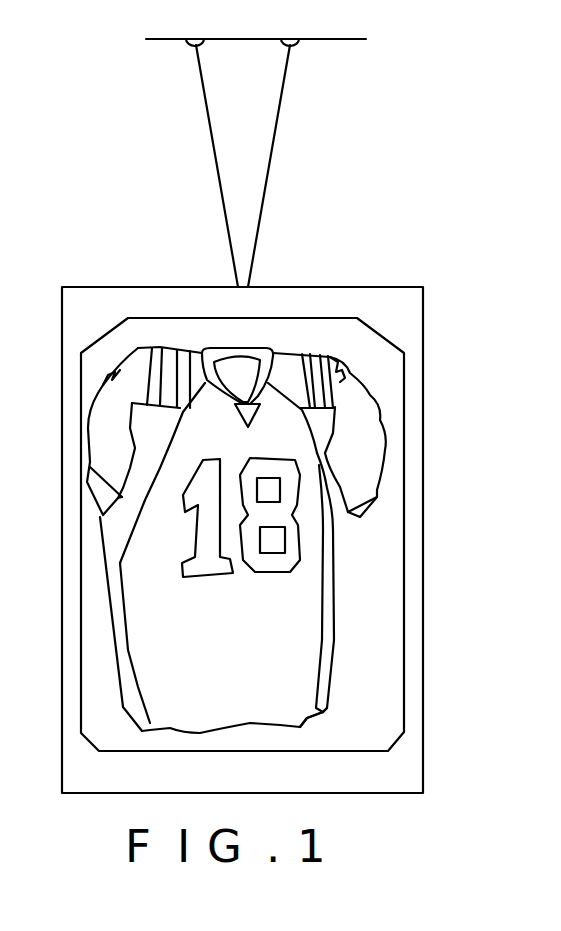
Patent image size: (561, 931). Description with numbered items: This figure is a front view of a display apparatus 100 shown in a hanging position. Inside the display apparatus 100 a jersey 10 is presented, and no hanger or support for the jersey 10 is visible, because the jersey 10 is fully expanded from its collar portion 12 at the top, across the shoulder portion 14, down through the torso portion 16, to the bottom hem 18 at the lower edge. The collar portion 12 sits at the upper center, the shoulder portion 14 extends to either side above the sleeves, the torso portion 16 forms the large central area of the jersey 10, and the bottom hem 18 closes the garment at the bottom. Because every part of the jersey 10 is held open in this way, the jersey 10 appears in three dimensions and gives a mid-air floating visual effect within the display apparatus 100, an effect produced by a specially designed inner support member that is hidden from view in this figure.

The display apparatus 100 is at (432, 348).
The jersey 10 is at (290, 616).
The collar portion 12 is at (250, 343).
The shoulder portion 14 is at (345, 350).
The torso portion 16 is at (326, 540).
The bottom hem 18 is at (333, 712).